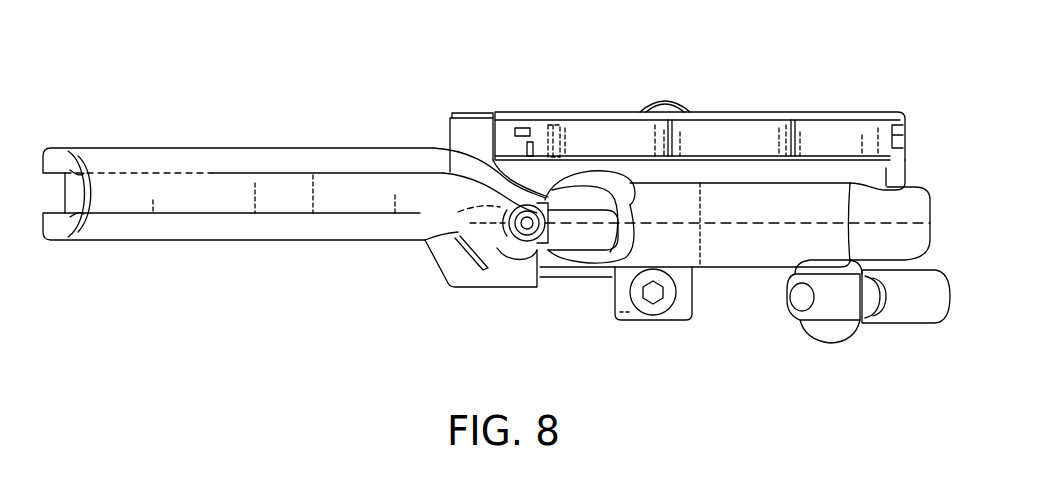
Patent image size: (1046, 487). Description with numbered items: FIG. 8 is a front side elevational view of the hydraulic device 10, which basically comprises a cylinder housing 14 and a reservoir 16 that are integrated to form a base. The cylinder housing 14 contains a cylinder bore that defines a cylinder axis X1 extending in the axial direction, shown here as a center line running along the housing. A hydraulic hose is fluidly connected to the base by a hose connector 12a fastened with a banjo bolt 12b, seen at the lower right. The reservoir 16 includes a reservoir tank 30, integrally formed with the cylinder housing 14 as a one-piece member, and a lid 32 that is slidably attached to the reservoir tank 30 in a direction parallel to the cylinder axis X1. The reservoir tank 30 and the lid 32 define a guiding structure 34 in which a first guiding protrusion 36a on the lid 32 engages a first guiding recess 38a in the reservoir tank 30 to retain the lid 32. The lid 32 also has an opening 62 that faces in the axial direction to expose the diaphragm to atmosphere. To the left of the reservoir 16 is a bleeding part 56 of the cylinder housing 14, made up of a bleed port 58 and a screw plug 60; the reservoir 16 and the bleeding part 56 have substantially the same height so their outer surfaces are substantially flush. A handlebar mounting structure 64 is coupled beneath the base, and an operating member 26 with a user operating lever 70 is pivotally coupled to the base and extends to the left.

The hydraulic device 10 is at (760, 40).
The hose connector 12a is at (900, 325).
The banjo bolt 12b is at (822, 345).
The cylinder housing 14 is at (933, 192).
The reservoir 16 is at (942, 72).
The operating member 26 is at (127, 147).
The reservoir tank 30 is at (893, 167).
The lid 32 is at (820, 112).
The guiding structure 34 is at (553, 135).
The first guiding protrusion 36a is at (528, 142).
The first guiding recess 38a is at (497, 145).
The bleeding part 56 is at (395, 77).
The bleed port 58 is at (450, 140).
The screw plug 60 is at (463, 113).
The opening 62 is at (535, 142).
The handlebar mounting structure 64 is at (672, 323).
The user operating lever 70 is at (209, 226).
The cylinder axis X1 is at (726, 228).